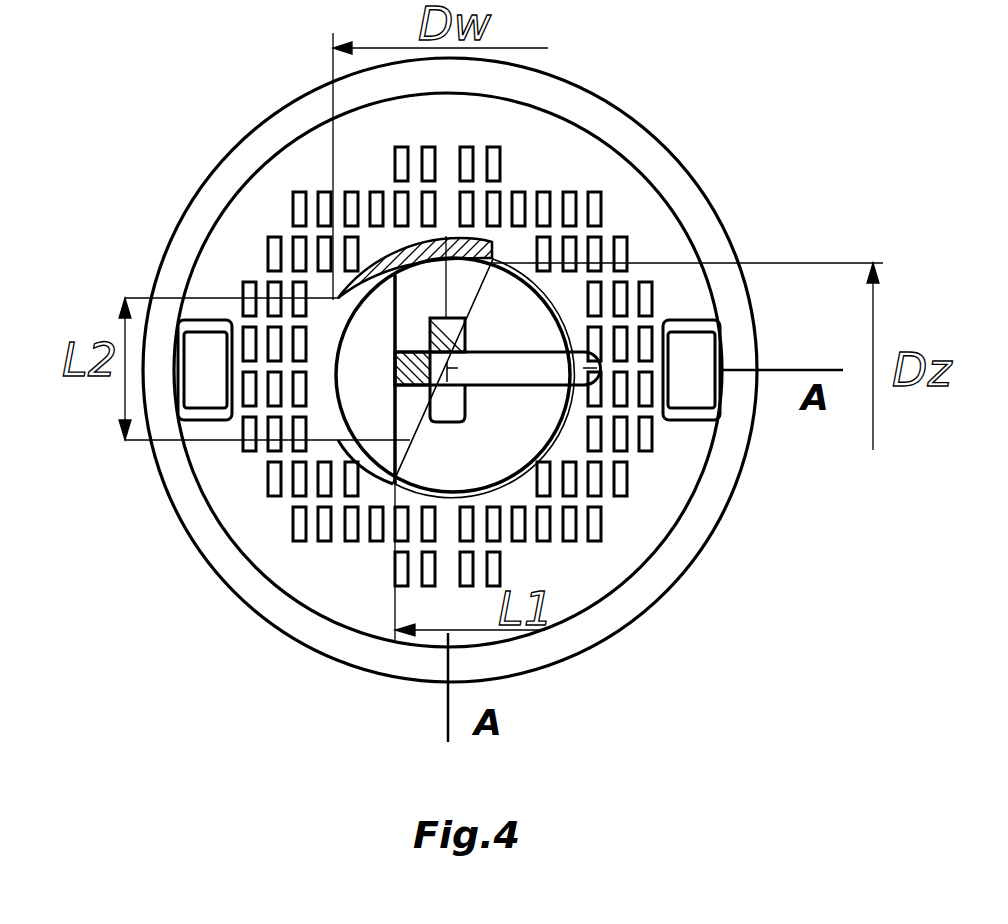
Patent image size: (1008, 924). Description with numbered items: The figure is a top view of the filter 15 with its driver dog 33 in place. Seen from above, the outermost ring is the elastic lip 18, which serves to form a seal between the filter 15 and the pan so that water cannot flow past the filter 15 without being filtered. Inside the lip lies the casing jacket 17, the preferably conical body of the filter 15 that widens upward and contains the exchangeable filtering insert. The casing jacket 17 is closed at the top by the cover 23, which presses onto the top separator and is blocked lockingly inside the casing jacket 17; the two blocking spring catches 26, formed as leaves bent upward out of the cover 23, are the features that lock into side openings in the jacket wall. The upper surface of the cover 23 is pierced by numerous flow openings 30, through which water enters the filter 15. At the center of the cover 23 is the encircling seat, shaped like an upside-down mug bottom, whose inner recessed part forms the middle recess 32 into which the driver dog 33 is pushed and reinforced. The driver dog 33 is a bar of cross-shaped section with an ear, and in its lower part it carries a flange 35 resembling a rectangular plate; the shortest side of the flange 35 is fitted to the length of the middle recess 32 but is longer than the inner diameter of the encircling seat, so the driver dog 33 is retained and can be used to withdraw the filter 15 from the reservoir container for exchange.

The filter 15 is at (623, 137).
The elastic lip 18 is at (733, 252).
The casing jacket 17 is at (686, 312).
The blocking spring catches 26 is at (693, 390).
The cover 23 is at (232, 280).
The flow openings 30 is at (278, 488).
The middle recess 32 is at (380, 395).
The driver dog 33 is at (450, 405).
The flange 35 is at (412, 320).